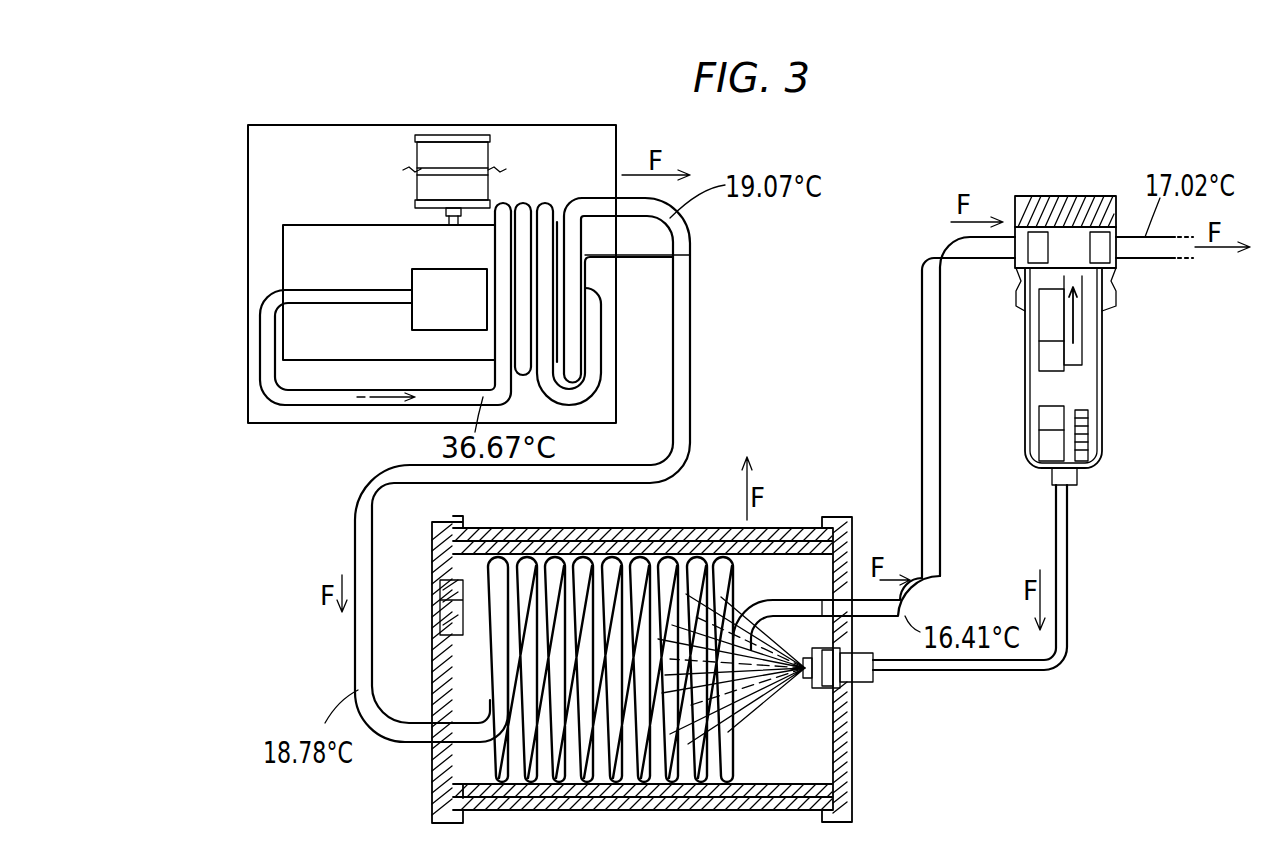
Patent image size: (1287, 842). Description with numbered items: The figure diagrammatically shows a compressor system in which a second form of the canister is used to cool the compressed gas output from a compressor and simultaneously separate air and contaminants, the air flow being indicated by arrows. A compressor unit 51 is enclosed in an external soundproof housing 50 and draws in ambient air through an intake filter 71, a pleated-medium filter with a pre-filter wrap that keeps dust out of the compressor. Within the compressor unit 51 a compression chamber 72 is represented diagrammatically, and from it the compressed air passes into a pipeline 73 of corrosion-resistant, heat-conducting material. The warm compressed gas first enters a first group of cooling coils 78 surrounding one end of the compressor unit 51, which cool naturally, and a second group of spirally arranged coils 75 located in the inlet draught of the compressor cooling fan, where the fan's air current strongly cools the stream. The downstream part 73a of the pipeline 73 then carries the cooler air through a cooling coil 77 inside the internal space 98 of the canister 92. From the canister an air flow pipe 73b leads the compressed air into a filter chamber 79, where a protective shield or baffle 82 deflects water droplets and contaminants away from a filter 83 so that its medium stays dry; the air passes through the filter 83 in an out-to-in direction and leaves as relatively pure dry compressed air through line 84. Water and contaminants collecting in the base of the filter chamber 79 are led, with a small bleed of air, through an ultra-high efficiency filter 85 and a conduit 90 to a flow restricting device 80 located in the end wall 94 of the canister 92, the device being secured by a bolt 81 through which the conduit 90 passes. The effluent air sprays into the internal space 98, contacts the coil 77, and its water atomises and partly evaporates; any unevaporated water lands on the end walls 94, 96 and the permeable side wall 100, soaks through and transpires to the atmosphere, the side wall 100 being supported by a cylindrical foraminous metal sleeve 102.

The external soundproof housing 50 is at (273, 427).
The compressor unit 51 is at (403, 223).
The intake filter 71 is at (460, 135).
The compression chamber 72 is at (412, 268).
The pipeline 73 is at (338, 407).
The downstream part of the pipeline 73a is at (683, 332).
The air flow pipe 73b is at (930, 478).
The second group of spirally arranged coils 75 is at (690, 255).
The cooling coil 77 is at (585, 570).
The first group of cooling coils 78 is at (545, 203).
The filter chamber 79 is at (1075, 196).
The flow restricting device 80 is at (803, 683).
The bolt 81 is at (860, 677).
The protective shield or baffle 82 is at (1087, 330).
The filter 83 is at (1075, 368).
The line 84 is at (1164, 258).
The filter 85 is at (1090, 448).
The conduit 90 is at (1040, 670).
The canister 92 is at (811, 508).
The end wall 94 is at (853, 560).
The end wall 96 is at (433, 583).
The internal space 98 is at (793, 597).
The side wall 100 is at (762, 540).
The cylindrical foraminous metal sleeve 102 is at (710, 528).